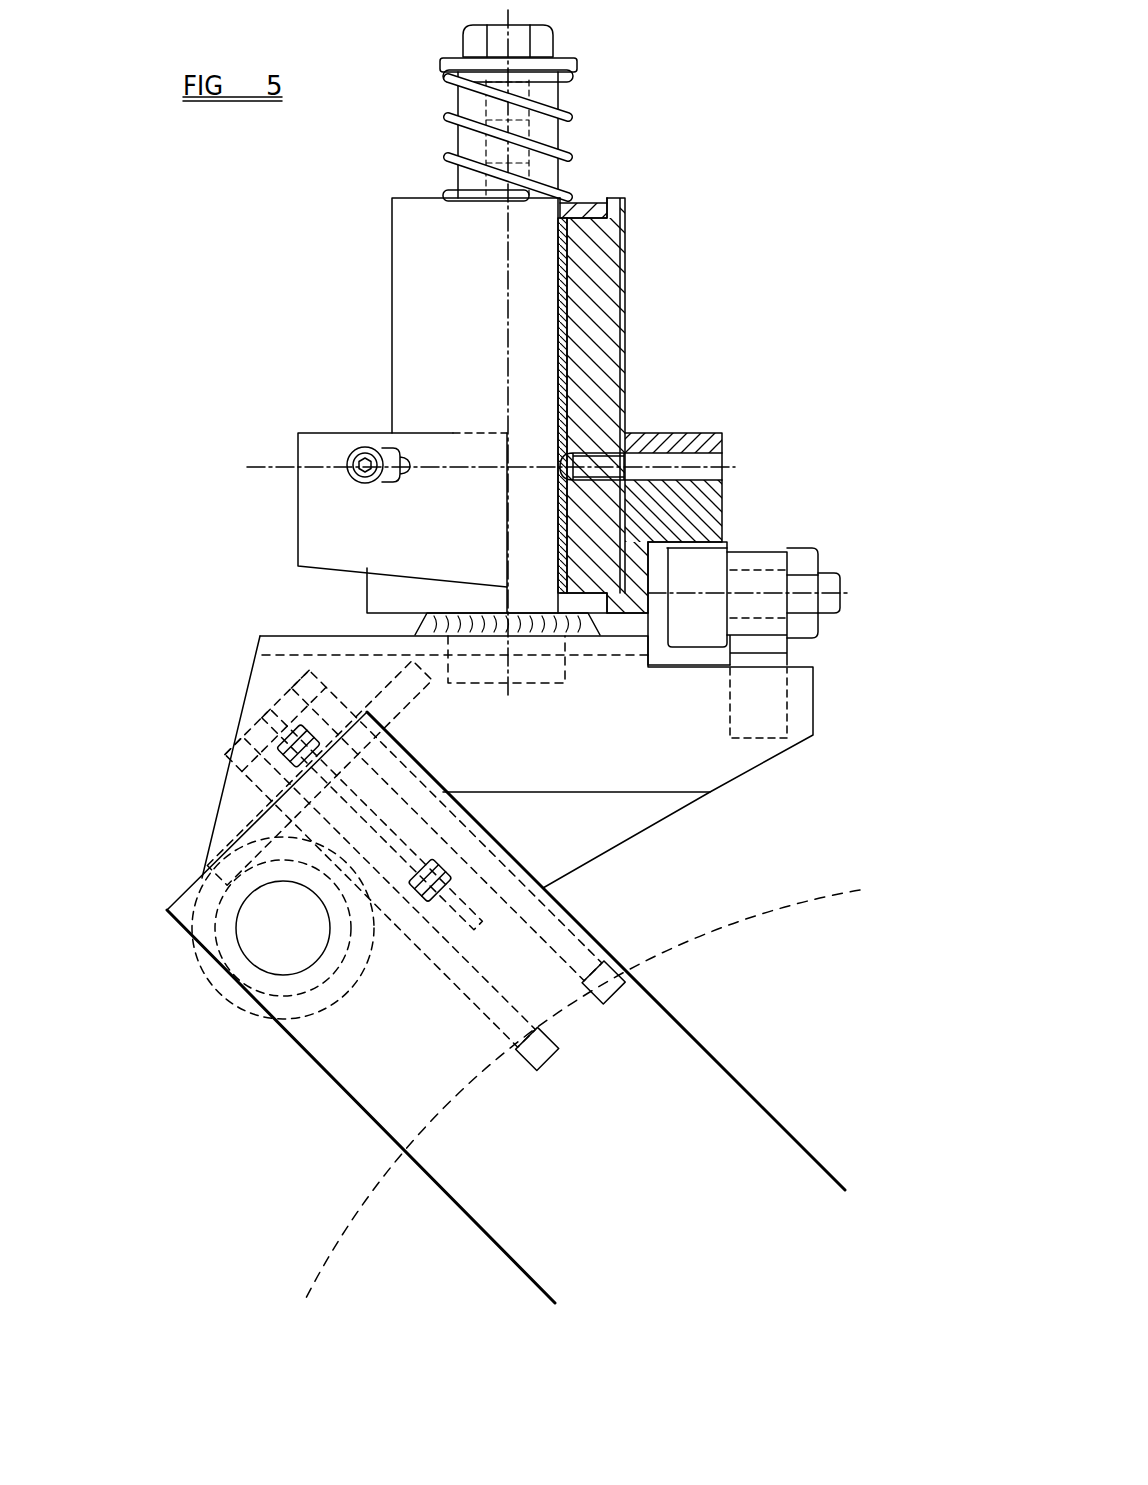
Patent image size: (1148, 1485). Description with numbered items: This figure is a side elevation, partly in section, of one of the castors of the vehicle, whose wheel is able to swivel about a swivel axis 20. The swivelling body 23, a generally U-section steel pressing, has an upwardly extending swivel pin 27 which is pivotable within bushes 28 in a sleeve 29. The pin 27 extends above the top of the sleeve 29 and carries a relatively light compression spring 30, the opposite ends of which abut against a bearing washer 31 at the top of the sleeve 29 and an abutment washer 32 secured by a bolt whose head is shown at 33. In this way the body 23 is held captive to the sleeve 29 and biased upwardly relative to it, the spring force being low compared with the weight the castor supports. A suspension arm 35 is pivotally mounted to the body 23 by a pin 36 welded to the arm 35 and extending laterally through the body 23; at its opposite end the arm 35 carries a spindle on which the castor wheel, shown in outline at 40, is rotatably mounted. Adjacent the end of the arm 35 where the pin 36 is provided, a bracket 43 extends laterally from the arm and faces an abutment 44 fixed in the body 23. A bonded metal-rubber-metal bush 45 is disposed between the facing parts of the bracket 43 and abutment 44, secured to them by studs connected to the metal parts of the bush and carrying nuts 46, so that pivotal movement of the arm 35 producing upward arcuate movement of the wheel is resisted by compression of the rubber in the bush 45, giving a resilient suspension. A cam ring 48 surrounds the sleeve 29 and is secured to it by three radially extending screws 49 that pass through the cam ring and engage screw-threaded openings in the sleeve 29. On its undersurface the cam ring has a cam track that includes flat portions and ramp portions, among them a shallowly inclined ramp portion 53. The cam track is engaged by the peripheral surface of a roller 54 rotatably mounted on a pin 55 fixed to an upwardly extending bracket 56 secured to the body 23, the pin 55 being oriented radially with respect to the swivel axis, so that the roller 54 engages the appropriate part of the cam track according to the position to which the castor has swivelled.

The swivel axis 20 is at (508, 262).
The swivelling body 23 is at (255, 705).
The swivel pin 27 is at (540, 370).
The bushes 28 is at (567, 270).
The sleeve 29 is at (403, 316).
The compression spring 30 is at (447, 118).
The bearing washer 31 is at (585, 214).
The abutment washer 32 is at (441, 63).
The bolt head 33 is at (545, 40).
The suspension arm 35 is at (303, 1050).
The pin 36 is at (252, 932).
The wheel 40 is at (370, 1190).
The bracket 43 is at (600, 957).
The abutment 44 is at (377, 697).
The bonded metal-rubber-metal bush 45 is at (347, 727).
The nuts 46 is at (270, 748).
The cam ring 48 is at (300, 440).
The radially extending screws 49 is at (372, 440).
The shallowly inclined ramp portion 53 is at (313, 577).
The roller 54 is at (712, 562).
The pin 55 is at (763, 580).
The upwardly extending bracket 56 is at (767, 638).